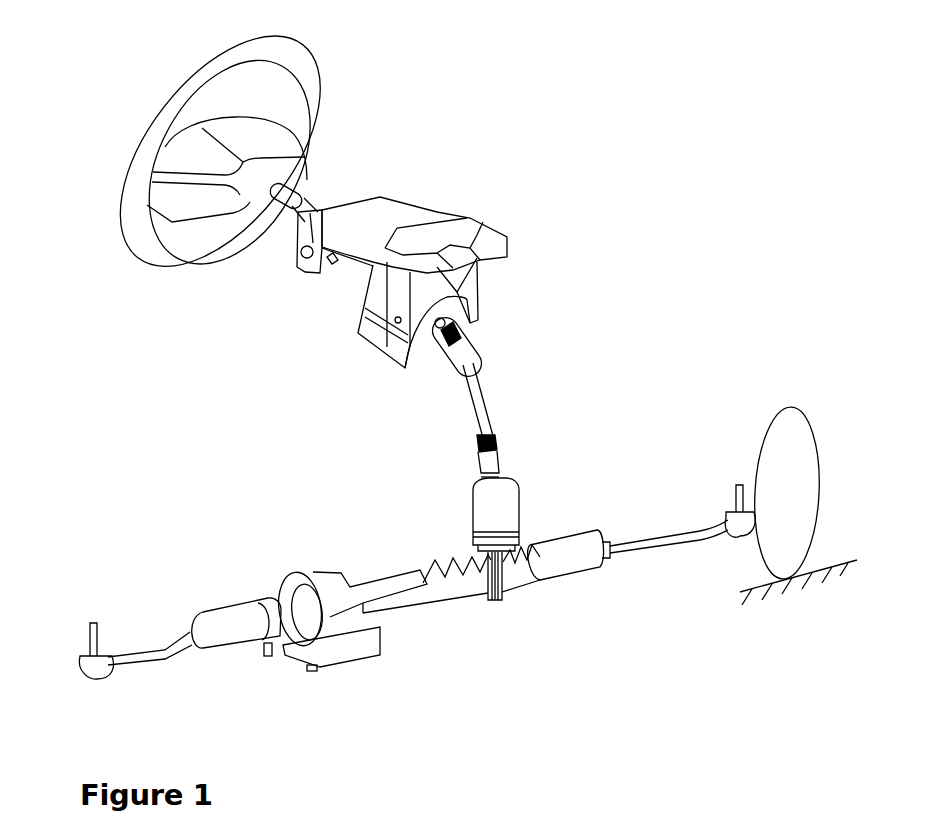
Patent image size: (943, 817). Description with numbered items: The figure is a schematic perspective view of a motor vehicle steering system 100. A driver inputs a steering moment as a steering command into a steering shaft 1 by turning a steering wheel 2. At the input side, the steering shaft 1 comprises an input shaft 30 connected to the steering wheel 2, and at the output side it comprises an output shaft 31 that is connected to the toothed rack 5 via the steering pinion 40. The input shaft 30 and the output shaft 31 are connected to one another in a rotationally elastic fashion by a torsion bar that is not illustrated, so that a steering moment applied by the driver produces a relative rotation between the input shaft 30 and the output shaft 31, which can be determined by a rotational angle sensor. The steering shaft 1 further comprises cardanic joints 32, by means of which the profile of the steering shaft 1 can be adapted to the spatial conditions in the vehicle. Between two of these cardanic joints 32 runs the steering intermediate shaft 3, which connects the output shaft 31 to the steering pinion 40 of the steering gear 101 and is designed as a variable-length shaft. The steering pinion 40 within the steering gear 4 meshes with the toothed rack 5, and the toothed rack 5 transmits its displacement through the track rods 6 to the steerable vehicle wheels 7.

The motor vehicle steering system 100 is at (519, 139).
The steering wheel 2 is at (310, 70).
The steering shaft 1 is at (297, 203).
The input shaft 30 is at (300, 207).
The output shaft 31 is at (436, 333).
The cardanic joints 32 is at (466, 336).
The steering shaft 3 is at (456, 400).
The steering gear 4 is at (510, 500).
The steering pinion 40 is at (503, 600).
The toothed rack 5 is at (433, 585).
The track rods 6 is at (653, 548).
The vehicle wheels 7 is at (790, 425).
The steering gear 101 is at (458, 541).